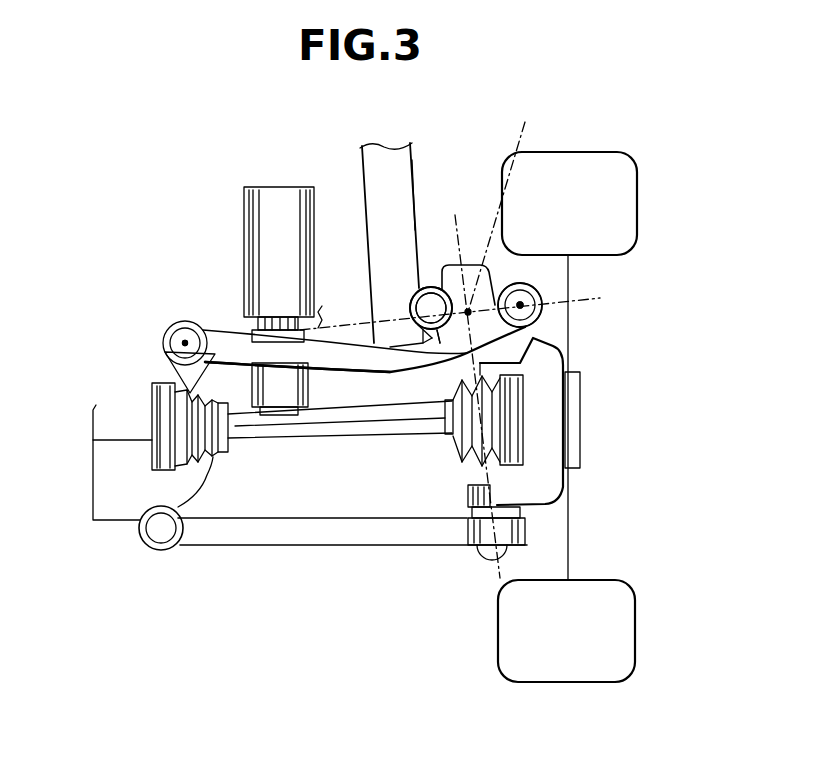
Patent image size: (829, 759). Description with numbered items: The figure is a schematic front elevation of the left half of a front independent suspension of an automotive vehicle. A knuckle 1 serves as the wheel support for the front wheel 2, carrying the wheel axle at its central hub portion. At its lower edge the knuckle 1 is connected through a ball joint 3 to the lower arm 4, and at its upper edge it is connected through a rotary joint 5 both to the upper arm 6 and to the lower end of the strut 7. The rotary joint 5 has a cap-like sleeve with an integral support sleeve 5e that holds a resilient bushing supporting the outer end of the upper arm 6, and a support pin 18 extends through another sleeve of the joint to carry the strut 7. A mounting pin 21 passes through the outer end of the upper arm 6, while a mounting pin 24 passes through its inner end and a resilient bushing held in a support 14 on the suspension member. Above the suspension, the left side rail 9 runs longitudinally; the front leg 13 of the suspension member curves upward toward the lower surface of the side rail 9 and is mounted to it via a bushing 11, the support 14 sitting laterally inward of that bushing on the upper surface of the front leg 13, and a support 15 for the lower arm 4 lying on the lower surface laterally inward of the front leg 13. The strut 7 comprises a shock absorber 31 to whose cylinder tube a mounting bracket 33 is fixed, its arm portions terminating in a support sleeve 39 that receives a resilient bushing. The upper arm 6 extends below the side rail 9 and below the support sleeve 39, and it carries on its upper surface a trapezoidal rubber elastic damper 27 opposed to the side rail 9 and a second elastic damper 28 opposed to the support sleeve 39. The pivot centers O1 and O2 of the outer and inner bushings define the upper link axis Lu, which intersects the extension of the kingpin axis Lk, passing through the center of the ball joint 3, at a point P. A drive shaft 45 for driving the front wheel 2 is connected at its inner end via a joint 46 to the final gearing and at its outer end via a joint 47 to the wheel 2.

The knuckle 1 is at (553, 413).
The front wheel 2 is at (607, 157).
The ball joint 3 is at (488, 553).
The lower arm 4 is at (332, 542).
The rotary joint 5 is at (447, 265).
The support sleeve 5e is at (542, 304).
The upper arm 6 is at (388, 367).
The strut 7 is at (360, 178).
The left side rail 9 is at (293, 198).
The bushing 11 is at (307, 387).
The front leg 13 is at (112, 507).
The support 14 is at (178, 372).
The support 15 is at (170, 548).
The support pin 18 is at (418, 325).
The mounting pin 21 is at (545, 290).
The mounting pin 24 is at (168, 333).
The elastic damper 27 is at (320, 325).
The elastic damper 28 is at (440, 328).
The shock absorber 31 is at (406, 168).
The mounting bracket 33 is at (413, 293).
The support sleeve 39 is at (430, 287).
The drive shaft 45 is at (305, 430).
The joint 46 is at (206, 460).
The joint 47 is at (465, 448).
The kingpin axis Lk is at (513, 208).
The upper link axis Lu is at (346, 325).
The intersection point P is at (470, 307).
The pivot center O1 is at (525, 307).
The pivot center O2 is at (185, 340).